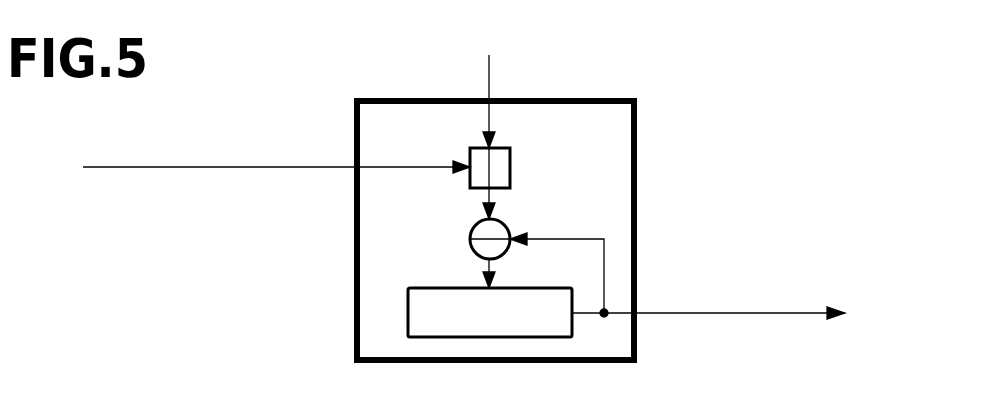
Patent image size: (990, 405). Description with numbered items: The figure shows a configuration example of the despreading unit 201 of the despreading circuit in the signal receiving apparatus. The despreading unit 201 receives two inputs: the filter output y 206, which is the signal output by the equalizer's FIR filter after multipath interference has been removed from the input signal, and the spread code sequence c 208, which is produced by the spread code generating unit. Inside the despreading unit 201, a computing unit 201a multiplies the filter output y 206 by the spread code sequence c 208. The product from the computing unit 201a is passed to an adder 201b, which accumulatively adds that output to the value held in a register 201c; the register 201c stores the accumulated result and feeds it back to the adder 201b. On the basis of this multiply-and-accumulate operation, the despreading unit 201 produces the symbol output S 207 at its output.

The despreading unit 201 is at (517, 362).
The computing unit 201a is at (510, 167).
The adder 201b is at (504, 224).
The register 201c is at (528, 288).
The filter output y 206 is at (213, 169).
The symbol output S 207 is at (752, 315).
The spread code sequence c 208 is at (489, 66).